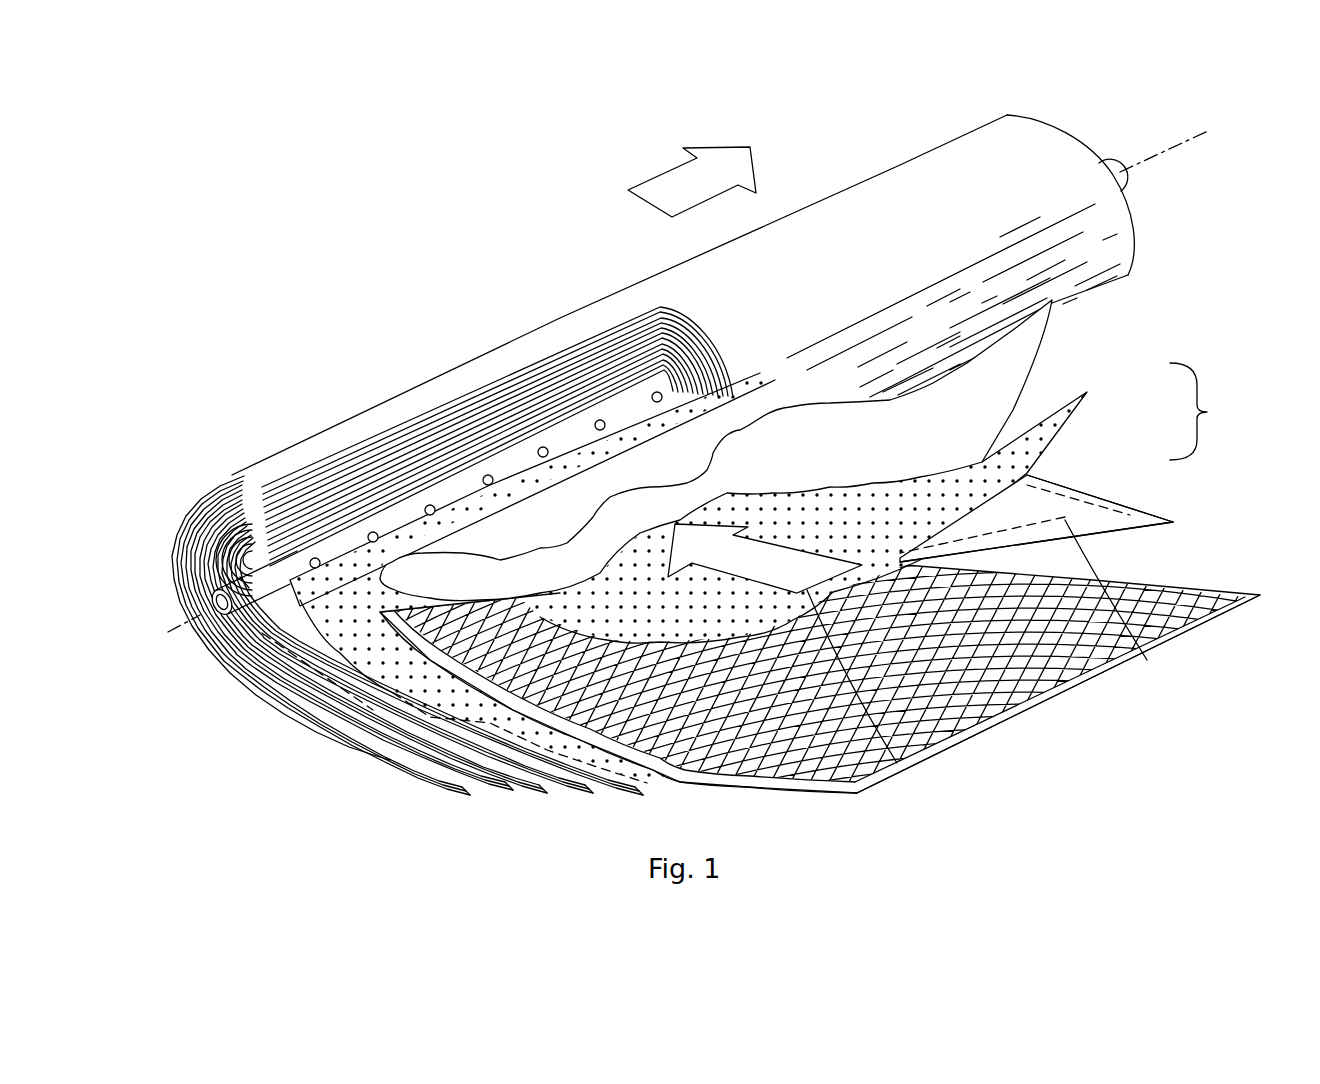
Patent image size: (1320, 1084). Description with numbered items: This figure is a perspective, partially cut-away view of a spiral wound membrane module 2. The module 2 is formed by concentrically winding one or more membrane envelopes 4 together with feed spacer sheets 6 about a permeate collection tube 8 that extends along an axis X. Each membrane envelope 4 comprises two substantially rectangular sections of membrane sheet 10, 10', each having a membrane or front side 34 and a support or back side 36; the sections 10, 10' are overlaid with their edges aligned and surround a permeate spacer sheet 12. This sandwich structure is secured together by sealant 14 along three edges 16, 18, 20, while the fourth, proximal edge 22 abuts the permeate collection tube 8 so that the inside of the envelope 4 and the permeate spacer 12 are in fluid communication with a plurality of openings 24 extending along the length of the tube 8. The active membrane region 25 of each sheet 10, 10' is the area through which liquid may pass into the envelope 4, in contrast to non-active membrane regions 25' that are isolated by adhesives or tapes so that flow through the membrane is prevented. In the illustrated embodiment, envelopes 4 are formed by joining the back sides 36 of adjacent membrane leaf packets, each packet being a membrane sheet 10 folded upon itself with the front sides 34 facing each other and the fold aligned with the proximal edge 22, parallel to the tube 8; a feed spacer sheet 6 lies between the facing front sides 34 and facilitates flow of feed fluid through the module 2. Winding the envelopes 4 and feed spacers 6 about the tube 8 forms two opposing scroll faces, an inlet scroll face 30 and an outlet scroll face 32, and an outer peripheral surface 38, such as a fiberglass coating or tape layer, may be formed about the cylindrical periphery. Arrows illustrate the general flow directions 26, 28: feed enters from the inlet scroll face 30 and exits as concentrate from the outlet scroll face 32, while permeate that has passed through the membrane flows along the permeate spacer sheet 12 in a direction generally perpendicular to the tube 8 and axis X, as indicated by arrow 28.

The spiral wound membrane module 2 is at (545, 300).
The membrane envelope 4 is at (1209, 412).
The feed spacer sheet 6 is at (997, 713).
The permeate collection tube 8 is at (215, 520).
The membrane sheet 10 is at (1042, 496).
The membrane sheet 10' is at (784, 450).
The permeate spacer sheet 12 is at (447, 787).
The sealant 14 is at (553, 763).
The edge 16 is at (373, 767).
The edge 18 is at (1140, 510).
The edge 20 is at (1127, 523).
The proximal edge 22 is at (323, 458).
The openings 24 is at (398, 548).
The active membrane region 25 is at (1093, 488).
The non-active membrane region 25' is at (1024, 544).
The flow direction 26 is at (655, 177).
The flow direction 28 is at (905, 762).
The inlet scroll face 30 is at (232, 533).
The outlet scroll face 32 is at (1099, 158).
The front side 34 is at (800, 787).
The back side 36 is at (1205, 633).
The outer peripheral surface 38 is at (468, 362).
The axis X is at (1197, 145).